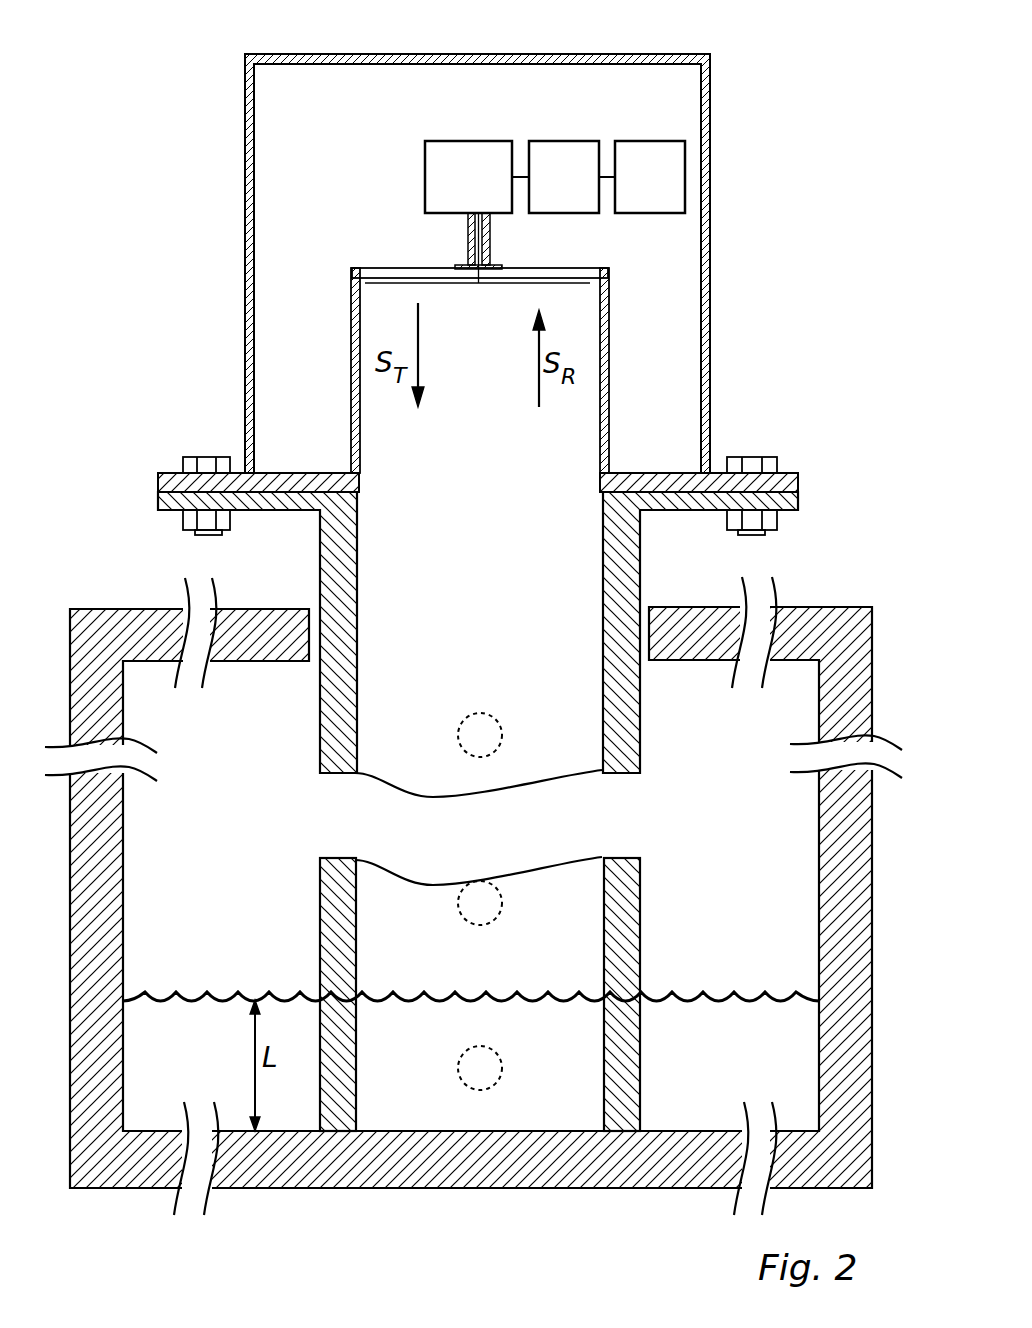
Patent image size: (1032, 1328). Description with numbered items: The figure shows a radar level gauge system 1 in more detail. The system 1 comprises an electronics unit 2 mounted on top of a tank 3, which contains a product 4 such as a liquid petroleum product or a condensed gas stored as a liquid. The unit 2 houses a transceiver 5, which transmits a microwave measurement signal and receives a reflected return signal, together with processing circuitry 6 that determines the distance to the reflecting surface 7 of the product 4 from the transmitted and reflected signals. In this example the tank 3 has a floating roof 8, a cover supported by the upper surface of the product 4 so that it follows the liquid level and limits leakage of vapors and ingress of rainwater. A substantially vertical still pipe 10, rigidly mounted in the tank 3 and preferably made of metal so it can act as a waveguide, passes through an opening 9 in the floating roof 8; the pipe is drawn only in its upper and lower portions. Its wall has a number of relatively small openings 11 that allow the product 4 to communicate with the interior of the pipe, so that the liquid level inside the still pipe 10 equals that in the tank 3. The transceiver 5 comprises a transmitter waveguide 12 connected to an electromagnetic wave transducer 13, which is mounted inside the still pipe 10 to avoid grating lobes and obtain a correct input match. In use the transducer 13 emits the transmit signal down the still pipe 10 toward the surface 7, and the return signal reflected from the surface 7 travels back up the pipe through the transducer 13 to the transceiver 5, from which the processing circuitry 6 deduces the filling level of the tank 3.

The radar level gauge system 1 is at (778, 313).
The electronics unit 2 is at (245, 248).
The tank 3 is at (123, 866).
The product 4 is at (538, 1062).
The transceiver 5 is at (425, 178).
The processing circuitry 6 is at (570, 141).
The surface 7 is at (650, 141).
The floating roof 8 is at (810, 607).
The opening 9 is at (312, 595).
The still pipe 10 is at (640, 565).
The openings 11 is at (478, 725).
The transmitter waveguide 12 is at (468, 238).
The electromagnetic wave transducer 13 is at (512, 285).